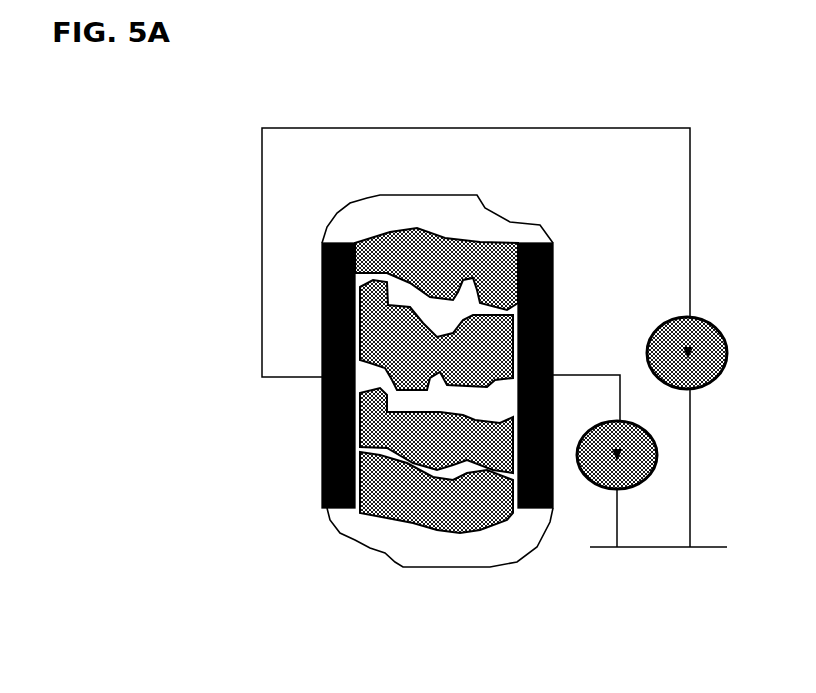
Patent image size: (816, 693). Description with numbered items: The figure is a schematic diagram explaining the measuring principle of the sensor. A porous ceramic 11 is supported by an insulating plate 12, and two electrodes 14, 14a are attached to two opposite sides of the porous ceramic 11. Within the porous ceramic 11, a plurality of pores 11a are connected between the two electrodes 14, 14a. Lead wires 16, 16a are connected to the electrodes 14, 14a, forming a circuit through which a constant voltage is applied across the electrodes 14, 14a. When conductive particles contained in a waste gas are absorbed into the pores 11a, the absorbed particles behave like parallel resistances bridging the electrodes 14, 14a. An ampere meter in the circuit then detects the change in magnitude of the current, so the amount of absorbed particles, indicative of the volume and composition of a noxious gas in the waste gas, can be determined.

The porous ceramic 11 is at (392, 494).
The pores 11a is at (490, 400).
The insulating plate 12 is at (433, 555).
The electrode 14 is at (322, 417).
The electrode 14a is at (553, 270).
The lead wire 16 is at (487, 128).
The lead wire 16a is at (583, 375).